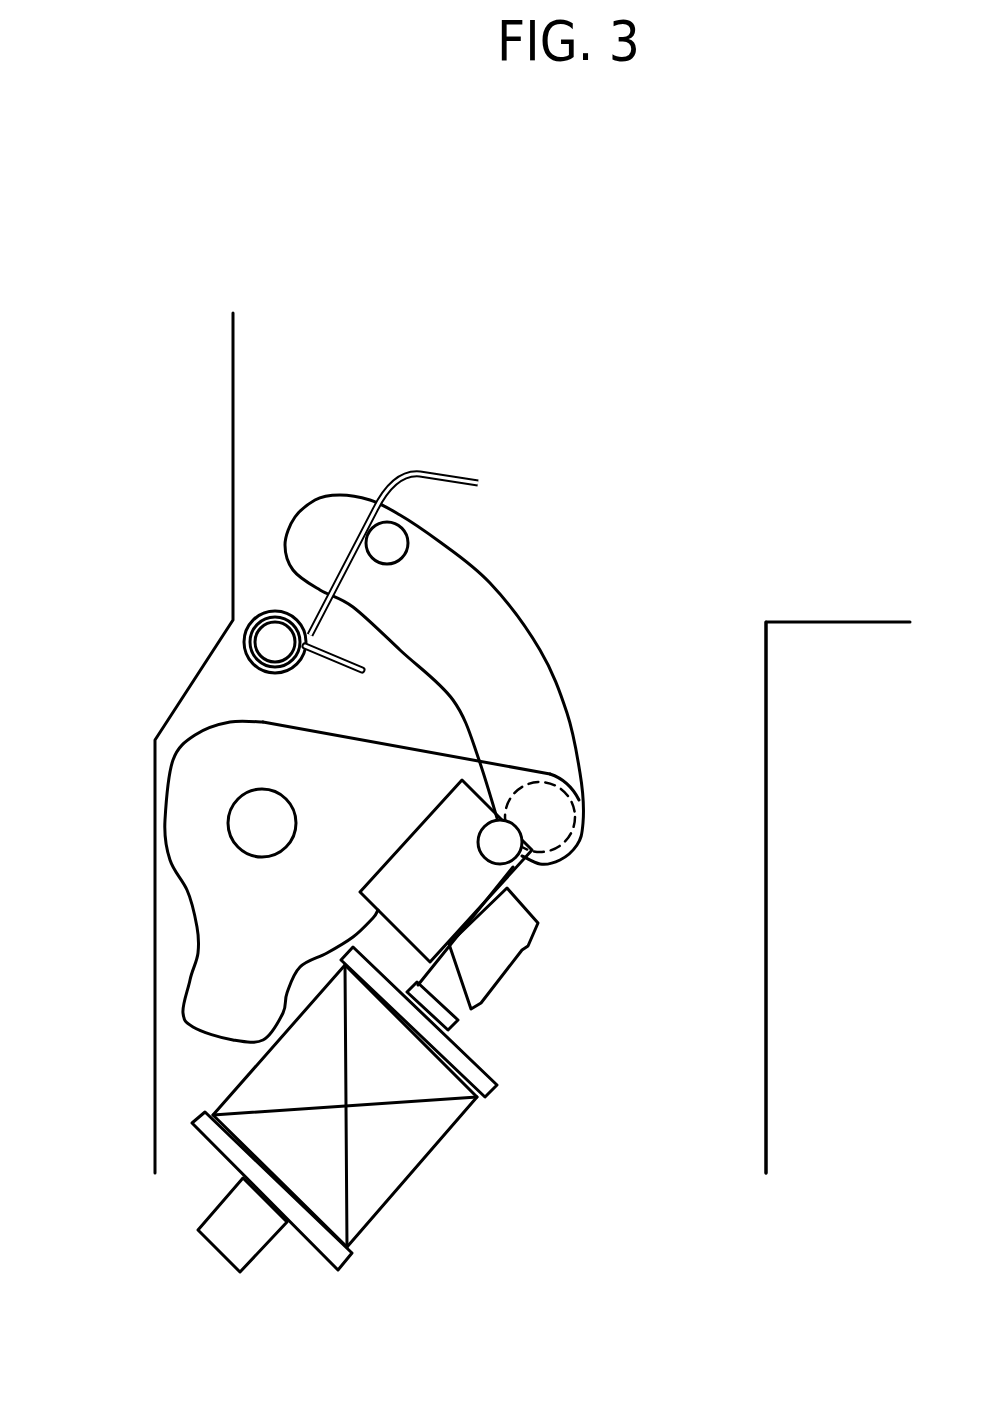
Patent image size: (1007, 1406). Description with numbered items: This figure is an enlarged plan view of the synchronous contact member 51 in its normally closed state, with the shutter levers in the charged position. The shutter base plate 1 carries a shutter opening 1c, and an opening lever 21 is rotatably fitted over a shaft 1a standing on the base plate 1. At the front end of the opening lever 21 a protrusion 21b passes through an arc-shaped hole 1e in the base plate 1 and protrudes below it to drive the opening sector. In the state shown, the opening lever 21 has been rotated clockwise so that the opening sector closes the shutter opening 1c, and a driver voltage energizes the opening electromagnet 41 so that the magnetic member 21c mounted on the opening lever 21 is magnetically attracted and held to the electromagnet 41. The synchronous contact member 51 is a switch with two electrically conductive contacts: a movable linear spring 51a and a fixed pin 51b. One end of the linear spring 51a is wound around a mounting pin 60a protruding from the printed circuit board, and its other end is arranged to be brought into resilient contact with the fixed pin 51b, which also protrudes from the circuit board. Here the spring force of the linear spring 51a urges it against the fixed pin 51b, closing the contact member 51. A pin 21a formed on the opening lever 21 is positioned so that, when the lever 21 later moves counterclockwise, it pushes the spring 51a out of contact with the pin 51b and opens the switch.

The shutter base plate 1 is at (832, 898).
The shaft 1a is at (243, 843).
The shutter opening 1c is at (766, 801).
The arc-shaped hole 1e is at (543, 653).
The opening lever 21 is at (180, 822).
The pin 21a is at (513, 870).
The protrusion 21b is at (550, 768).
The magnetic member 21c is at (460, 1005).
The opening electromagnet 41 is at (383, 1178).
The synchronous contact member 51 is at (366, 493).
The linear spring 51a is at (342, 562).
The fixed pin 51b is at (408, 533).
The mounting pin 60a is at (243, 630).